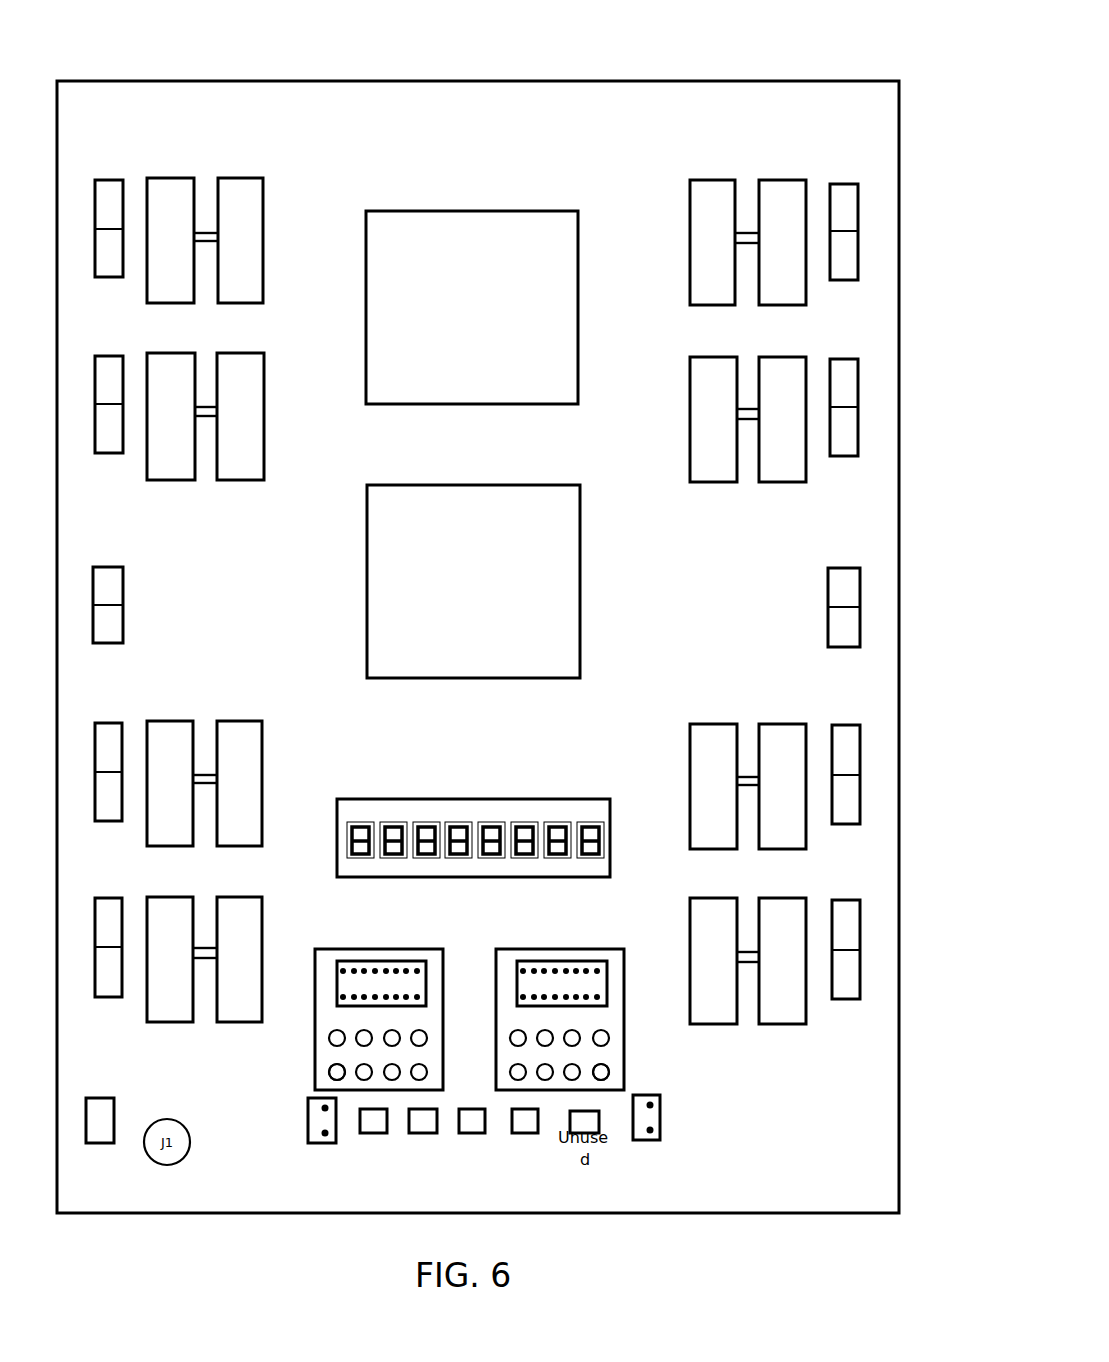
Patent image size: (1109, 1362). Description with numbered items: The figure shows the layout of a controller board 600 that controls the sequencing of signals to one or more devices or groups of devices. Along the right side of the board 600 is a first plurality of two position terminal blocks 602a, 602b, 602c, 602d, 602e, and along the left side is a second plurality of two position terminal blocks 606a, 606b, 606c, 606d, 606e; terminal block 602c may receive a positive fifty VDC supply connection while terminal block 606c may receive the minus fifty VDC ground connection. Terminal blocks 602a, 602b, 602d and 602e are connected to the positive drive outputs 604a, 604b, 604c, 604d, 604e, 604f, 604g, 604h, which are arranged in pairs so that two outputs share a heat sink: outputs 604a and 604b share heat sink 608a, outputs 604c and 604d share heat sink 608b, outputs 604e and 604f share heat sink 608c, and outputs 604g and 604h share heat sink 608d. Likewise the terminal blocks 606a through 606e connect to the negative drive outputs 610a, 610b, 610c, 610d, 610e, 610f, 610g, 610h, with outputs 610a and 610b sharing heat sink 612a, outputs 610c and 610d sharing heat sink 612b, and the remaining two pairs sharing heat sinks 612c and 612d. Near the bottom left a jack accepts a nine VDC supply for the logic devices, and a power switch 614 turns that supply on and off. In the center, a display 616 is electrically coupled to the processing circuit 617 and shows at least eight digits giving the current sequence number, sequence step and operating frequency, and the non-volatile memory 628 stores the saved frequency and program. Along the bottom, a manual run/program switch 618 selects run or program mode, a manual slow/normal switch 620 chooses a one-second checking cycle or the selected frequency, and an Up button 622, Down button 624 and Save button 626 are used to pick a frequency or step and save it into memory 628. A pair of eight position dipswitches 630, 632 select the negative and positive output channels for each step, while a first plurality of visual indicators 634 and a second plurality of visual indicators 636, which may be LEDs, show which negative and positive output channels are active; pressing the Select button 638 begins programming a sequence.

The controller board 600 is at (702, 68).
The two position terminal block 602a is at (848, 917).
The two position terminal block 602b is at (843, 745).
The two position terminal block 602c is at (840, 583).
The two position terminal block 602d is at (847, 378).
The two position terminal block 602e is at (845, 199).
The positive drive output 604a is at (782, 961).
The positive drive output 604b is at (713, 961).
The positive drive output 604c is at (782, 786).
The positive drive output 604d is at (713, 786).
The positive drive output 604e is at (782, 419).
The positive drive output 604f is at (713, 419).
The positive drive output 604g is at (782, 242).
The positive drive output 604h is at (712, 242).
The two position terminal block 606a is at (103, 917).
The two position terminal block 606b is at (112, 740).
The two position terminal block 606c is at (107, 588).
The two position terminal block 606d is at (107, 377).
The two position terminal block 606e is at (110, 199).
The heat sink 608a is at (749, 957).
The heat sink 608b is at (748, 780).
The heat sink 608c is at (747, 414).
The heat sink 608d is at (748, 238).
The negative drive output 610a is at (170, 959).
The negative drive output 610b is at (239, 959).
The negative drive output 610c is at (170, 783).
The negative drive output 610d is at (239, 783).
The negative drive output 610e is at (171, 416).
The negative drive output 610f is at (240, 416).
The negative drive output 610g is at (170, 240).
The negative drive output 610h is at (240, 240).
The heat sink 612a is at (203, 955).
The heat sink 612b is at (207, 778).
The heat sink 612c is at (207, 413).
The heat sink 612d is at (205, 236).
The power switch 614 is at (97, 1128).
The display 616 is at (475, 799).
The processing circuit 617 is at (581, 313).
The manual run/program switch 618 is at (307, 1148).
The manual slow/normal switch 620 is at (655, 1119).
The Up button 622 is at (423, 1123).
The Down button 624 is at (472, 1127).
The Save button 626 is at (523, 1127).
The non-volatile memory 628 is at (581, 587).
The eight position dipswitch 630 is at (400, 962).
The eight position dipswitch 632 is at (571, 962).
The first plurality of visual indicators 634 is at (332, 1052).
The second plurality of visual indicators 636 is at (608, 1052).
The Select button 638 is at (365, 1122).